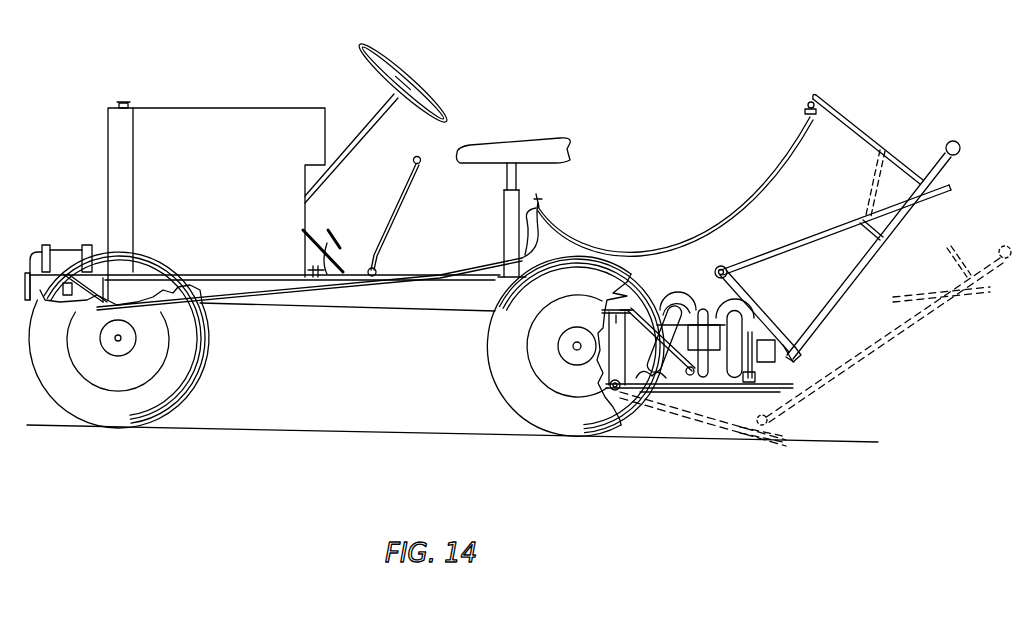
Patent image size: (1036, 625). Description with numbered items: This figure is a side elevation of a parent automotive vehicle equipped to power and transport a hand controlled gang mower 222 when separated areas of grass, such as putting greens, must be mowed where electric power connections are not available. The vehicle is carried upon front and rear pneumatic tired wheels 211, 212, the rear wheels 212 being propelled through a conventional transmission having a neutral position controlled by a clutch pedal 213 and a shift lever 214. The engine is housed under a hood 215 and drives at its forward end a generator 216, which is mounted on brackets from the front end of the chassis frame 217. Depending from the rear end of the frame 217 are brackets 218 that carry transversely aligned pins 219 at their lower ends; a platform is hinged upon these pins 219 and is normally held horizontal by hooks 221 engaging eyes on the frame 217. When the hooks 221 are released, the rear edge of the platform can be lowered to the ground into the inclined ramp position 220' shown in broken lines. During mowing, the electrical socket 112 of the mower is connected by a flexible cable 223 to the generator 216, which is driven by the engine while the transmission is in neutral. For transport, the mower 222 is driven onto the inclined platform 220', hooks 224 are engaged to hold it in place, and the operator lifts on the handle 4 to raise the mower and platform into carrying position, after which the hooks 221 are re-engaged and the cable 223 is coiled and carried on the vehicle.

The handle 4 is at (958, 141).
The socket 112 is at (806, 106).
The front pneumatic tired wheels 211 is at (99, 410).
The rear pneumatic tired wheels 212 is at (556, 432).
The clutch pedal 213 is at (333, 232).
The shift lever 214 is at (412, 183).
The hood 215 is at (183, 133).
The generator 216 is at (32, 257).
The chassis frame 217 is at (404, 298).
The brackets 218 is at (614, 366).
The pins 219 is at (608, 392).
The inclined position of platform 220' is at (703, 428).
The hooks 221 is at (652, 303).
The gang mower 222 is at (755, 259).
The flexible cable 223 is at (605, 240).
The hooks 224 is at (763, 331).